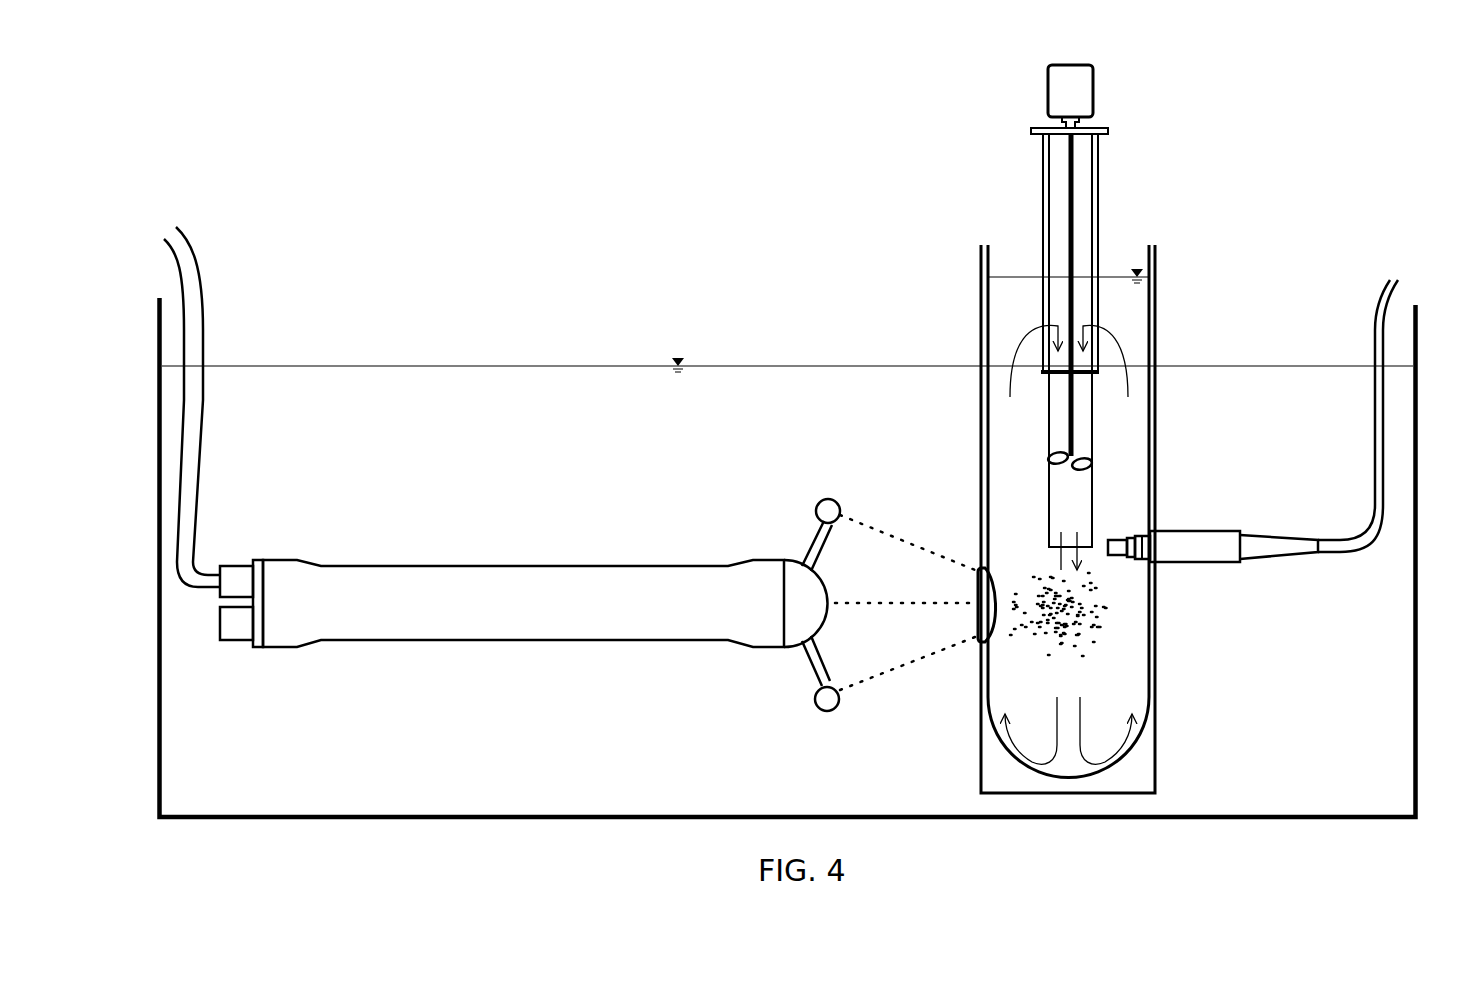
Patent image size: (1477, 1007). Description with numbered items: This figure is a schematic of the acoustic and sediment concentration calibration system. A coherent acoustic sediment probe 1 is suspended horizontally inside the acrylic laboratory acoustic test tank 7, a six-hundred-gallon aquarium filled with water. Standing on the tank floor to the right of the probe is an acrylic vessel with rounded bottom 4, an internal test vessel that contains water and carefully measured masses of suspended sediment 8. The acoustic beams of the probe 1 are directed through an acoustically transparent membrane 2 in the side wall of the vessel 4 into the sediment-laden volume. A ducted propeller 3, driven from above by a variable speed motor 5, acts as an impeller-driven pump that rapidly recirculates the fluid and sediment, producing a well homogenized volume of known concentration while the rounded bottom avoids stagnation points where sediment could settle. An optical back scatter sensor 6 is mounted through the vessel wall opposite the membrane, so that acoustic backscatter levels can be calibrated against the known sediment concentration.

The coherent acoustic sediment probe 1 is at (770, 556).
The acoustically transparent membrane 2 is at (972, 652).
The ducted propeller 3 is at (1045, 453).
The acrylic vessel with rounded bottom 4 is at (1160, 704).
The variable speed motor 5 is at (1102, 89).
The optical back scatter sensor 6 is at (1198, 526).
The acrylic laboratory acoustic test tank 7 is at (1421, 387).
The suspended sediment 8 is at (1115, 619).